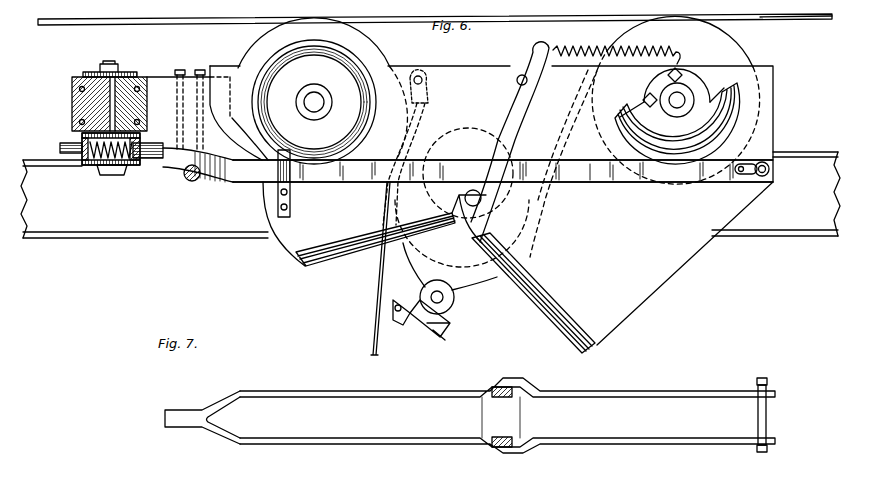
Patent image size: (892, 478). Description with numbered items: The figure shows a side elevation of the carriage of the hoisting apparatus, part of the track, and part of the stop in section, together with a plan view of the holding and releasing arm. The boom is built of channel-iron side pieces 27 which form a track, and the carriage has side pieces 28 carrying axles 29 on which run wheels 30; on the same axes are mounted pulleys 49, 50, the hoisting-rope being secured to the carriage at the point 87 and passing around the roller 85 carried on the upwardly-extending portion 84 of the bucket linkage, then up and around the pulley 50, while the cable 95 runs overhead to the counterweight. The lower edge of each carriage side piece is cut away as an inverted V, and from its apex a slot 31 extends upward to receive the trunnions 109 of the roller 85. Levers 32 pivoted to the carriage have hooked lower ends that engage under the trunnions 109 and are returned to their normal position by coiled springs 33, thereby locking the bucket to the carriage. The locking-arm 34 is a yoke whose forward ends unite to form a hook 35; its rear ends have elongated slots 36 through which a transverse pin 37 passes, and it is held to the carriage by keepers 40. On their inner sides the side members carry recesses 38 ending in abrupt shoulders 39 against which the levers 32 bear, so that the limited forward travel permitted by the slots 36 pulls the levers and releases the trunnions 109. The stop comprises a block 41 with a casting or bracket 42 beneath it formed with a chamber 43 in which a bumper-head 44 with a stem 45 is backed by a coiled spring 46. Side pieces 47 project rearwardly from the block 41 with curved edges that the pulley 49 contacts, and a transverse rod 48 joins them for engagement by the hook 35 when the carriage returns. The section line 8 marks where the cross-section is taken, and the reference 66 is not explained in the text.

In FIG. 6, the cable 95 is at (192, 20).
In FIG. 6, the upper bar end 66 is at (768, 16).
In FIG. 6, the side pieces of the boom 27 is at (812, 238).
In FIG. 6, the casting or bracket 42 is at (81, 168).
In FIG. 6, the section line 8 8 is at (460, 66).
In FIG. 6, the pulley 49 is at (352, 32).
In FIG. 6, the pulley 50 is at (736, 46).
In FIG. 6, the wheels 30 is at (280, 78).
In FIG. 6, the axles 29 is at (318, 106).
In FIG. 6, the levers 32 is at (522, 100).
In FIG. 7, the levers 32 is at (508, 397).
In FIG. 6, the coiled springs 33 is at (574, 50).
In FIG. 6, the point 87 is at (430, 84).
In FIG. 6, the block 41 is at (72, 98).
In FIG. 6, the side pieces 47 is at (160, 88).
In FIG. 6, the stem 45 is at (66, 144).
In FIG. 6, the chamber 43 is at (92, 166).
In FIG. 6, the coiled spring 46 is at (105, 166).
In FIG. 6, the bumper-head 44 is at (152, 146).
In FIG. 6, the hook 35 is at (180, 172).
In FIG. 7, the hook 35 is at (173, 428).
In FIG. 6, the transverse rod 48 is at (196, 181).
In FIG. 6, the keepers 40 is at (278, 197).
In FIG. 6, the slots 31 is at (455, 215).
In FIG. 6, the trunnions 109 is at (480, 200).
In FIG. 6, the locking-arm 34 is at (601, 183).
In FIG. 7, the locking-arm 34 is at (421, 440).
In FIG. 6, the elongated slots 36 is at (744, 175).
In FIG. 6, the transverse pin 37 is at (770, 171).
In FIG. 7, the transverse pin 37 is at (769, 413).
In FIG. 6, the side pieces of the carriage 28 is at (661, 275).
In FIG. 6, the roller 85 is at (494, 280).
In FIG. 6, the upwardly-extending portion 84 is at (452, 315).
In FIG. 7, the abrupt shoulders 39 is at (482, 432).
In FIG. 7, the recesses 38 is at (530, 432).